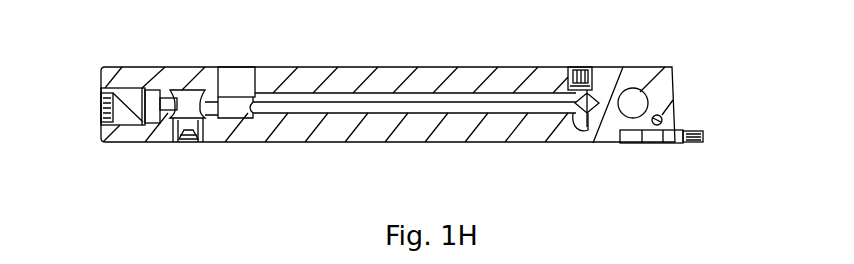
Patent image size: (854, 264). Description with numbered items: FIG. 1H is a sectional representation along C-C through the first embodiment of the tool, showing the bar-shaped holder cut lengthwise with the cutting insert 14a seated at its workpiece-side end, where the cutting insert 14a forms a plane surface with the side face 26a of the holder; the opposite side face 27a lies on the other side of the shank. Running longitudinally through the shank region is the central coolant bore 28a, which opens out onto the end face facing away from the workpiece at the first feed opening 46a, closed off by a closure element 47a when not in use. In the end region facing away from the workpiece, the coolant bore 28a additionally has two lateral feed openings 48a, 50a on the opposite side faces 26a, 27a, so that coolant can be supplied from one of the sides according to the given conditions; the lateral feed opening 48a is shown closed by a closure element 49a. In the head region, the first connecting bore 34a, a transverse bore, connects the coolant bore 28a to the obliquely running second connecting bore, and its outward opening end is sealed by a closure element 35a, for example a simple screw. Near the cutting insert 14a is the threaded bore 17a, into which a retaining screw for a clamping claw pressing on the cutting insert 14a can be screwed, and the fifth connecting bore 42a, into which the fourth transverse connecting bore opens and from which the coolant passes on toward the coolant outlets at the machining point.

The cutting insert 14a is at (668, 137).
The threaded bore 17a is at (645, 92).
The side face 26a is at (357, 143).
The side face 27a is at (398, 66).
The central coolant bore 28a is at (512, 108).
The first connecting bore 34a is at (557, 67).
The closure element 35a is at (581, 68).
The fifth connecting bore 42a is at (659, 117).
The first feed opening 46a is at (99, 114).
The closure element 47a is at (122, 127).
The lateral feed opening 48a is at (238, 70).
The closure element 49a is at (195, 68).
The lateral feed opening 50a is at (172, 130).